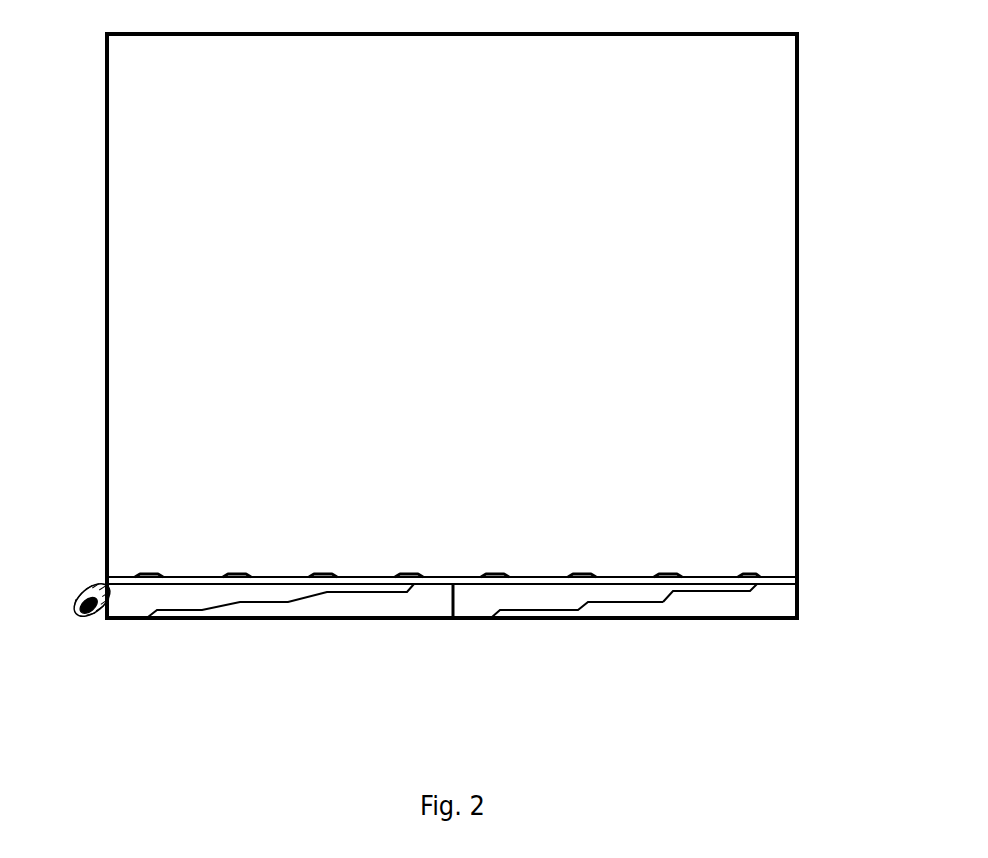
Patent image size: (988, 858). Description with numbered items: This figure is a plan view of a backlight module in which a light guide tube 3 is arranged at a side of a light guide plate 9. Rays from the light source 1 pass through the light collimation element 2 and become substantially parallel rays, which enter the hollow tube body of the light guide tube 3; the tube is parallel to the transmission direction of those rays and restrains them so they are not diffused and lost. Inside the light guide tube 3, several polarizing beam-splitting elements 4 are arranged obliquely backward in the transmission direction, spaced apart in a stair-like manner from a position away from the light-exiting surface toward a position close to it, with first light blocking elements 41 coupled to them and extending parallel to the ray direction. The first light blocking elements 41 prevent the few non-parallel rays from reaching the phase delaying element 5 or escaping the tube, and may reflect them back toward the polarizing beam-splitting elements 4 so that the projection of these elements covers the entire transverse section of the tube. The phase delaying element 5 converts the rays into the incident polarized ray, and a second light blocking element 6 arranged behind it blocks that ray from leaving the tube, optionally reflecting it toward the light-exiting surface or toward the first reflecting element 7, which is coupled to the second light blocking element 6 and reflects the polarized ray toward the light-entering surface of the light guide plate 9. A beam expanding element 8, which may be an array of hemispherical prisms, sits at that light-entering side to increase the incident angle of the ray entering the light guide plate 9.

The light source 1 is at (78, 597).
The light collimation element 2 is at (95, 617).
The light guide tube 3 is at (303, 619).
The polarizing beam-splitting element 4 is at (325, 593).
The first light blocking element 41 is at (290, 603).
The phase delaying element 5 is at (453, 618).
The second light blocking element 6 is at (628, 602).
The first reflecting element 7 is at (668, 592).
The beam expanding element 8 is at (760, 577).
The light guide plate 9 is at (705, 275).